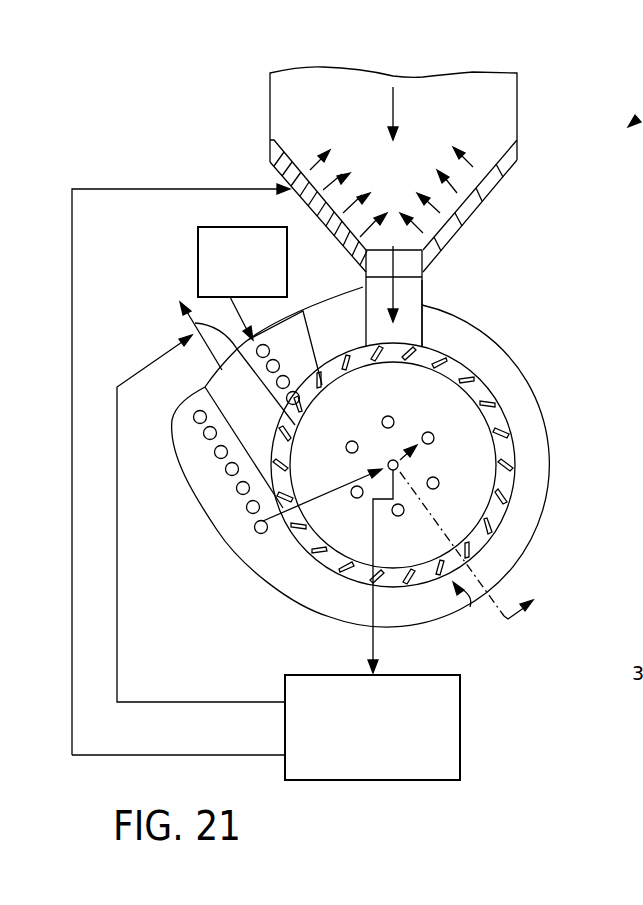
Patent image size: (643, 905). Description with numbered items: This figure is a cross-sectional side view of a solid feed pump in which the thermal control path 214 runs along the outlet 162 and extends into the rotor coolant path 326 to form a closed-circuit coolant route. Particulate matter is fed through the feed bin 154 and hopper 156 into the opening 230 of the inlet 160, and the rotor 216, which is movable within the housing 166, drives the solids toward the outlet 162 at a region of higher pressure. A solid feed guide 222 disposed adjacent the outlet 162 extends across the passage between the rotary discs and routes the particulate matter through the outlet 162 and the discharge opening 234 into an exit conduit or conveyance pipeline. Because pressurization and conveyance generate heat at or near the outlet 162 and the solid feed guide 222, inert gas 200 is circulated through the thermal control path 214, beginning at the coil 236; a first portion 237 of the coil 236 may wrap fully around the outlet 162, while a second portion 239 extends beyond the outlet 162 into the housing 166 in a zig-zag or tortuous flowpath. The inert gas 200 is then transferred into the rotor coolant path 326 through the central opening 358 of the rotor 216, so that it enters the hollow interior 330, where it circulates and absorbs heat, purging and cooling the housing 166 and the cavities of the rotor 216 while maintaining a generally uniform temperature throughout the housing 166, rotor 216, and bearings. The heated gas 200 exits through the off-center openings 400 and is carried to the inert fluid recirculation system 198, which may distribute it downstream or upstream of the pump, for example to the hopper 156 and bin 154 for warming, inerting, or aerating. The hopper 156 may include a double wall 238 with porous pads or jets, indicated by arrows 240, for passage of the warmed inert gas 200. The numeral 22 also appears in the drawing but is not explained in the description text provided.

The feed bin 154 is at (518, 90).
The hopper 156 is at (487, 190).
The inlet 160 is at (423, 290).
The outlet 162 is at (195, 323).
The housing 166 is at (557, 470).
The inert fluid recirculation system 198 is at (373, 782).
The inert gas 200 is at (197, 258).
The thermal control path 214 is at (196, 454).
The rotor 216 is at (470, 607).
The solid feed guide 222 is at (300, 368).
The pellet flow direction 22 is at (409, 540).
The opening 230 is at (423, 277).
The discharge opening 234 is at (192, 340).
The coil 236 is at (317, 302).
The first portion of the coil 237 is at (190, 429).
The double wall 238 is at (273, 175).
The second portion of the coil 239 is at (233, 519).
The arrows 240 is at (313, 167).
The rotor coolant path 326 is at (412, 480).
The hollow interior 330 is at (466, 429).
The central opening 358 is at (393, 459).
The off-center openings 400 is at (346, 444).